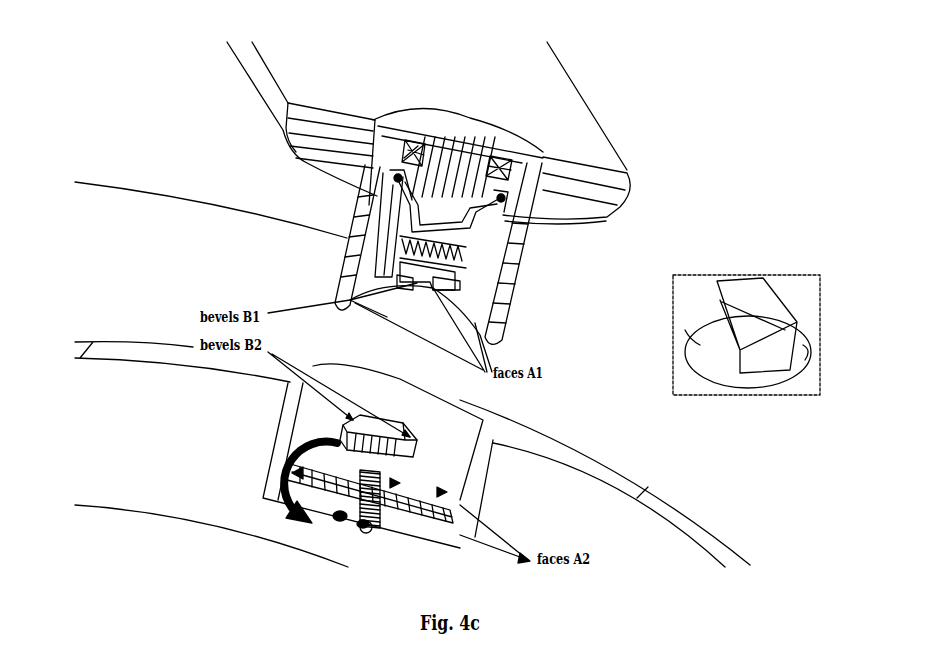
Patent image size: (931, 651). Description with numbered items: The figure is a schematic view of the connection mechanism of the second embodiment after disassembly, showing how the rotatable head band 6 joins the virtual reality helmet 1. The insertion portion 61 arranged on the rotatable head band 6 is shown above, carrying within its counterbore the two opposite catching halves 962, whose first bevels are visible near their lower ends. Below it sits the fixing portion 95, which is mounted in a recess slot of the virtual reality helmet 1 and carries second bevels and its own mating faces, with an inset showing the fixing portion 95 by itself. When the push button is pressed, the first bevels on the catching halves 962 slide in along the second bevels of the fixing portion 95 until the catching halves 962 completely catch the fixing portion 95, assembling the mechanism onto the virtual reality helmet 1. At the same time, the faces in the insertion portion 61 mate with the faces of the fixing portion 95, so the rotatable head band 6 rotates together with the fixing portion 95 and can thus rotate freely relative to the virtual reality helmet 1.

The rotatable head band 6 is at (578, 133).
The insertion portion 61 is at (342, 265).
The catching halves 962 is at (370, 203).
The fixing portion 95 is at (400, 487).
The virtual reality helmet 1 is at (572, 517).